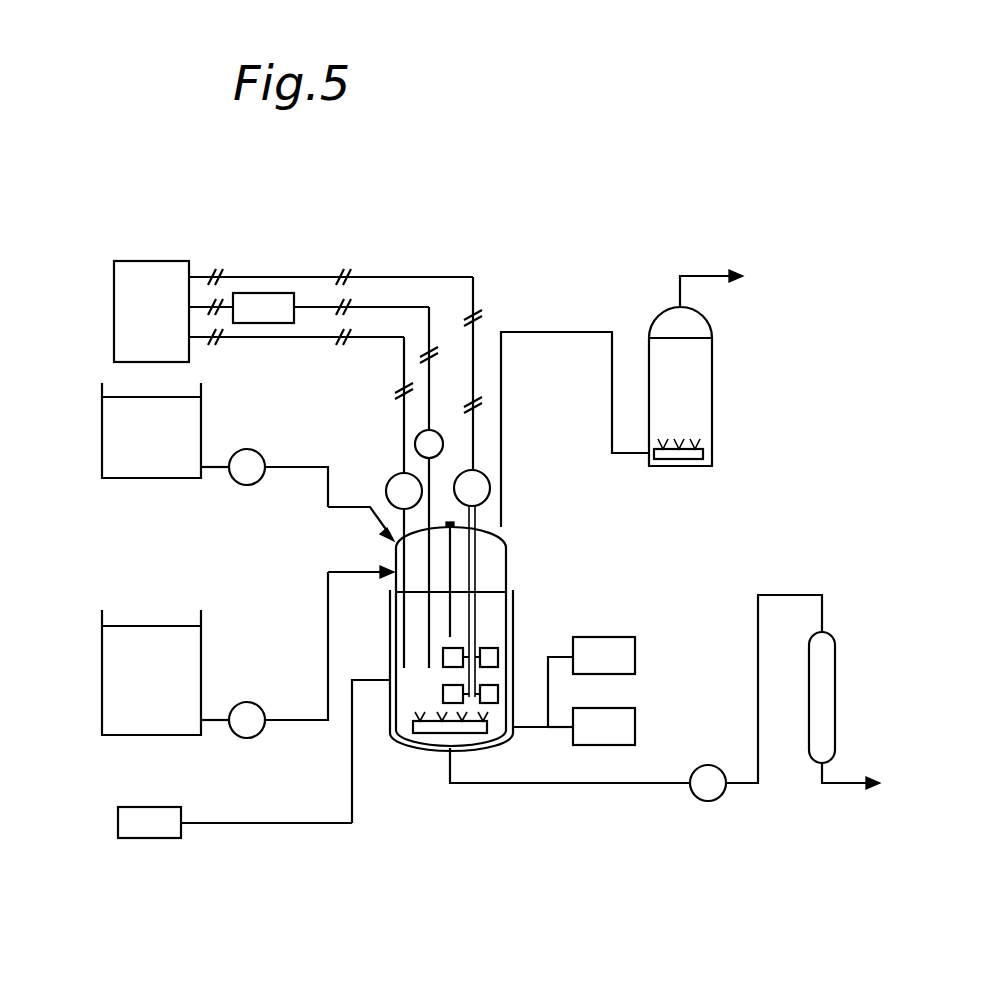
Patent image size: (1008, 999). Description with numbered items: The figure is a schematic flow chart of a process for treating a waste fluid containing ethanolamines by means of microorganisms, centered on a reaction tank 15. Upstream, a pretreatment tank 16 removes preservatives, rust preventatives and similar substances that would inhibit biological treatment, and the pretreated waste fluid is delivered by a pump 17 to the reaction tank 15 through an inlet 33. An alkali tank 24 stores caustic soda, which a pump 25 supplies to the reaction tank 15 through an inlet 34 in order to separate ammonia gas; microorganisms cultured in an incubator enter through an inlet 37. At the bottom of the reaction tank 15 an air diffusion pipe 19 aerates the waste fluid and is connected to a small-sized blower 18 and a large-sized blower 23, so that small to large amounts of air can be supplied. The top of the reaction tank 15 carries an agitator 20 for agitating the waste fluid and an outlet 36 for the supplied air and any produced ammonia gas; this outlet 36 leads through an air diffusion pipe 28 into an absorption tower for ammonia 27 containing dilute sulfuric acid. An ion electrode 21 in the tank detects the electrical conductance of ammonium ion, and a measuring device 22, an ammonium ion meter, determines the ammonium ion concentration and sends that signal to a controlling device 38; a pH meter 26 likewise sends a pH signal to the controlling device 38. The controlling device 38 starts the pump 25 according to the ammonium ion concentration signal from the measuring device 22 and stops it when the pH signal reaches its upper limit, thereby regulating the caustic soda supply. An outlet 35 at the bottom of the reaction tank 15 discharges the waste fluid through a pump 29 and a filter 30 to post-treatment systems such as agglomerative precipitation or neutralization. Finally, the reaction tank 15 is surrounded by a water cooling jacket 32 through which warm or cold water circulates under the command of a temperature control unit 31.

The reaction tank 15 is at (513, 572).
The pretreatment tank 16 is at (102, 688).
The pump 17 is at (247, 702).
The small-sized blower 18 is at (607, 637).
The air diffusion pipe 19 is at (393, 729).
The agitator 20 is at (490, 488).
The ion electrode 21 is at (437, 432).
The measuring device (ammonium ion meter) 22 is at (262, 293).
The large-sized blower 23 is at (607, 708).
The alkali tank 24 is at (102, 434).
The pump 25 is at (247, 449).
The measuring device (pH meter) 26 is at (394, 476).
The absorption tower for ammonia 27 is at (712, 385).
The air diffusion pipe 28 is at (703, 453).
The pump 29 is at (708, 765).
The filter 30 is at (835, 693).
The temperature control unit 31 is at (148, 838).
The water cooling jacket 32 is at (410, 746).
The inlet 33 is at (393, 578).
The inlet 34 is at (393, 541).
The outlet 35 is at (450, 752).
The outlet 36 is at (508, 527).
The inlet 37 is at (448, 525).
The controlling device 38 is at (170, 261).